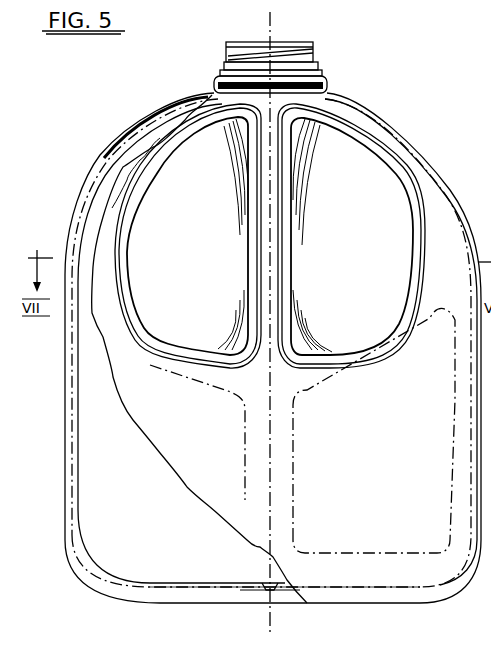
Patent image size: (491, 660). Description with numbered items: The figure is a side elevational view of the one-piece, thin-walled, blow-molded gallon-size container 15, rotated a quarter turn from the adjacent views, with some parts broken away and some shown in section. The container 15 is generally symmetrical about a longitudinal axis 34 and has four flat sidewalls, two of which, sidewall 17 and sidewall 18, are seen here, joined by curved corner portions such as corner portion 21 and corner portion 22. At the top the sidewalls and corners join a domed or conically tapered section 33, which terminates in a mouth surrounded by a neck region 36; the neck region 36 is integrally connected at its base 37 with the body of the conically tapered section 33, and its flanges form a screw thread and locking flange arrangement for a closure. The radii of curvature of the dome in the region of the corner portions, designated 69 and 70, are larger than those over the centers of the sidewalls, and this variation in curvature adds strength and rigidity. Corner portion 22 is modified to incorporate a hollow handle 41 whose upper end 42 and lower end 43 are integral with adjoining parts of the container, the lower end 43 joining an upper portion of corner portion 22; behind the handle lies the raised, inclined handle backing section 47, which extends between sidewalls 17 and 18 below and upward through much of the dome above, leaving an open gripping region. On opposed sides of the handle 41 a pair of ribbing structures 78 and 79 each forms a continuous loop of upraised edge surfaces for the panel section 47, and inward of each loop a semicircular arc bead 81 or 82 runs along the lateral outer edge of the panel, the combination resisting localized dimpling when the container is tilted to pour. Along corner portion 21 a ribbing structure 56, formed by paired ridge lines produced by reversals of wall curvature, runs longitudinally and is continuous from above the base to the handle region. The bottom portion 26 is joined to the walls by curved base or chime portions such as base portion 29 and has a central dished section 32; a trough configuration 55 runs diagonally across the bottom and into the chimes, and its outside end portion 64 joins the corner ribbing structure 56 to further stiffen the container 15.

The container 15 is at (402, 89).
The sidewall 17 is at (213, 466).
The sidewall 18 is at (370, 466).
The curved corner portion 21 is at (65, 535).
The curved corner portion 22 is at (285, 610).
The bottom portion 26 is at (185, 600).
The curved base portion 29 is at (418, 594).
The dished section 32 is at (221, 602).
The conically tapered section 33 is at (356, 99).
The longitudinal axis 34 is at (271, 32).
The neck region 36 is at (224, 66).
The base of neck region 37 is at (214, 88).
The hollow handle 41 is at (262, 232).
The upper end portion of handle 42 is at (298, 137).
The lower end portion of handle 43 is at (290, 297).
The handle backing section 47 is at (354, 201).
The trough configuration 55 is at (127, 590).
The ribbing structure 56 is at (77, 214).
The outside end portion of trough configuration 64 is at (88, 565).
The radius of curvature of domed portion 69 is at (142, 132).
The radius of curvature of domed portion 70 is at (419, 141).
The ribbing structure 78 is at (419, 278).
The ribbing structure 79 is at (158, 349).
The arc bead 81 is at (410, 247).
The arc bead 82 is at (130, 247).